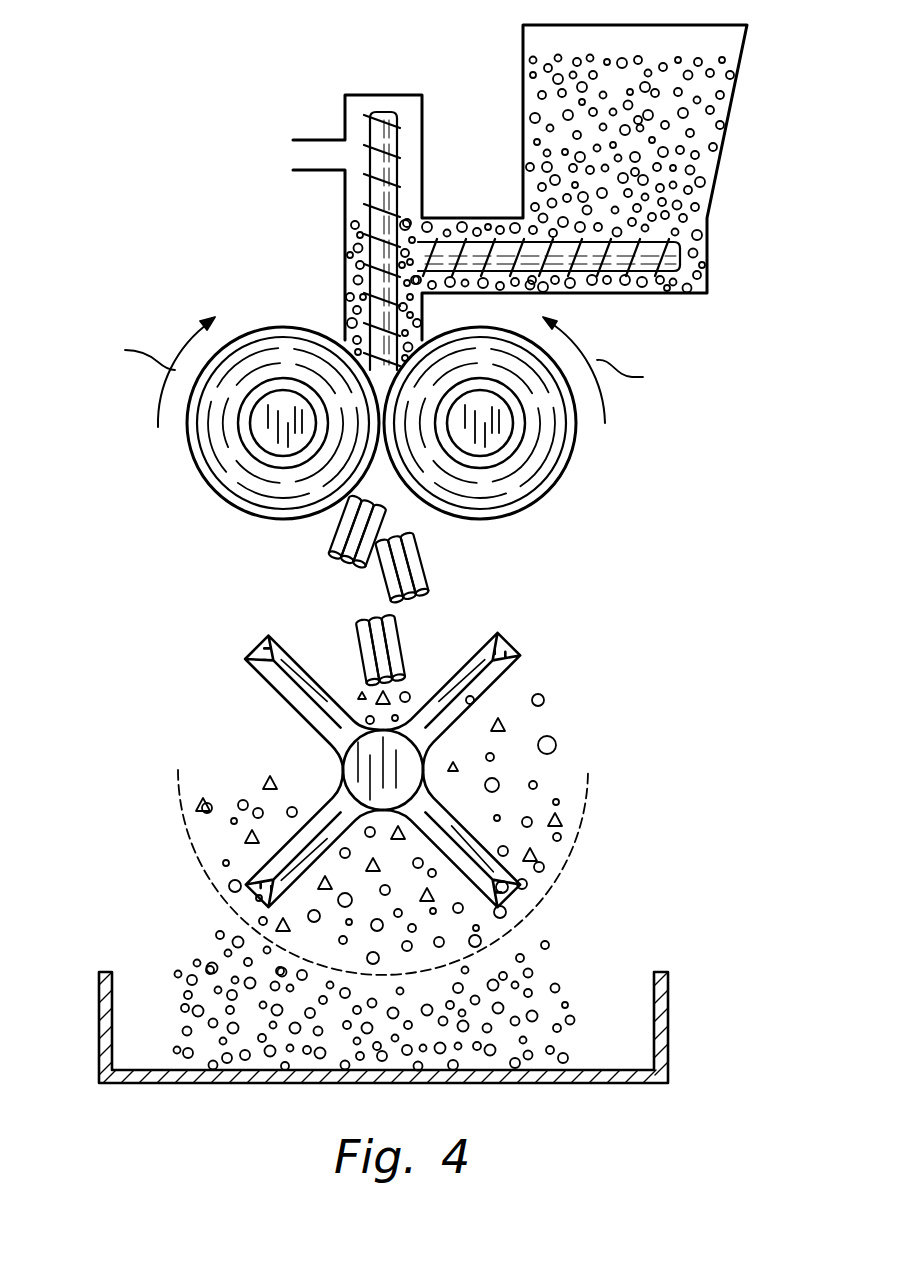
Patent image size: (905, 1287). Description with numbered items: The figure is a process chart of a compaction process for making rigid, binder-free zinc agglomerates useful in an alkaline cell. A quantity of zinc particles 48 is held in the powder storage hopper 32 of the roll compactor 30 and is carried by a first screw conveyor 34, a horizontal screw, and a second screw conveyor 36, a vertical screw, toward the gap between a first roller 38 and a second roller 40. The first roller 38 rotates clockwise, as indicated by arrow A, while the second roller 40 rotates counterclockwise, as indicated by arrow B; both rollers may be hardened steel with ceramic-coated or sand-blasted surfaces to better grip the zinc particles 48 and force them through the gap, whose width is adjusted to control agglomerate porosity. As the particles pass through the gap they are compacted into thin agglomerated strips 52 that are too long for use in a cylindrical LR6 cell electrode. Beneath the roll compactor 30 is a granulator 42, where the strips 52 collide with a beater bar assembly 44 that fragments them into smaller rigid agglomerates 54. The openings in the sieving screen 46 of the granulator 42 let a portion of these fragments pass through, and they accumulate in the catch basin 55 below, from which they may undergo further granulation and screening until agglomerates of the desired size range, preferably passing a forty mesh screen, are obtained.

The roll compactor 30 is at (257, 276).
The powder storage hopper 32 is at (736, 90).
The first screw conveyor 34 is at (648, 262).
The second screw conveyor 36 is at (380, 126).
The first roller 38 is at (207, 485).
The second roller 40 is at (553, 493).
The granulator 42 is at (148, 716).
The beater bar assembly 44 is at (510, 672).
The screen 46 is at (543, 897).
The zinc particles 48 is at (522, 138).
The agglomerated strips 52 is at (420, 556).
The rigid agglomerates 54 is at (537, 785).
The catch basin 55 is at (662, 1030).